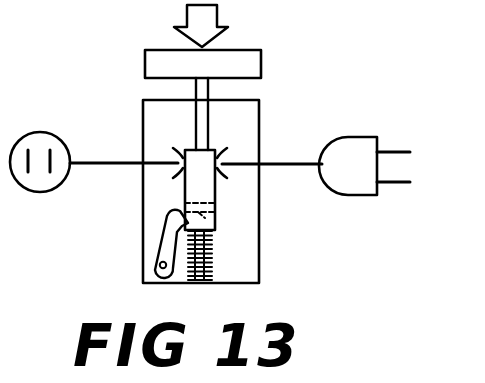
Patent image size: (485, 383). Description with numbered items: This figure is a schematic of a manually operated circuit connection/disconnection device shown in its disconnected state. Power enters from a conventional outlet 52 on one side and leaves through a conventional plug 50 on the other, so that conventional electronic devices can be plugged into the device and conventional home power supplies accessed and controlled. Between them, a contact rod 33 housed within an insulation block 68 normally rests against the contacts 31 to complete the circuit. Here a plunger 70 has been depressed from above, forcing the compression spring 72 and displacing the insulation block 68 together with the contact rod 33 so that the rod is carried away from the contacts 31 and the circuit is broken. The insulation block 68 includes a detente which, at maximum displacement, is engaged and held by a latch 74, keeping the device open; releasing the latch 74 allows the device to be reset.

The plunger 70 is at (156, 52).
The conventional outlet 52 is at (44, 133).
The conventional plug 50 is at (370, 137).
The insulation block 68 is at (215, 186).
The contacts 31 is at (176, 150).
The contact rod 33 is at (215, 226).
The latch 74 is at (163, 244).
The compression spring 72 is at (214, 250).